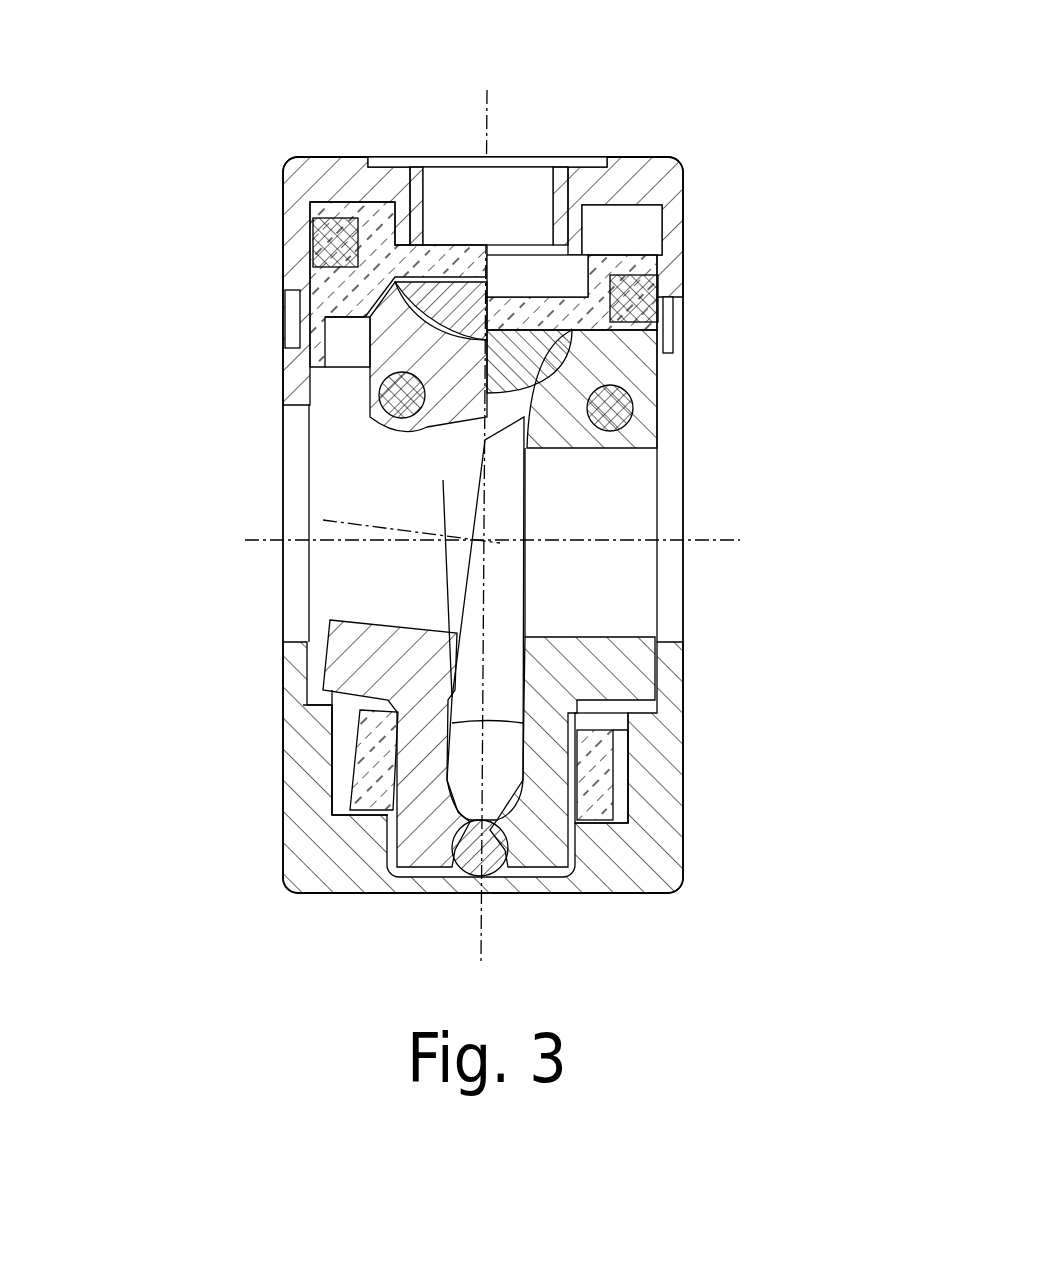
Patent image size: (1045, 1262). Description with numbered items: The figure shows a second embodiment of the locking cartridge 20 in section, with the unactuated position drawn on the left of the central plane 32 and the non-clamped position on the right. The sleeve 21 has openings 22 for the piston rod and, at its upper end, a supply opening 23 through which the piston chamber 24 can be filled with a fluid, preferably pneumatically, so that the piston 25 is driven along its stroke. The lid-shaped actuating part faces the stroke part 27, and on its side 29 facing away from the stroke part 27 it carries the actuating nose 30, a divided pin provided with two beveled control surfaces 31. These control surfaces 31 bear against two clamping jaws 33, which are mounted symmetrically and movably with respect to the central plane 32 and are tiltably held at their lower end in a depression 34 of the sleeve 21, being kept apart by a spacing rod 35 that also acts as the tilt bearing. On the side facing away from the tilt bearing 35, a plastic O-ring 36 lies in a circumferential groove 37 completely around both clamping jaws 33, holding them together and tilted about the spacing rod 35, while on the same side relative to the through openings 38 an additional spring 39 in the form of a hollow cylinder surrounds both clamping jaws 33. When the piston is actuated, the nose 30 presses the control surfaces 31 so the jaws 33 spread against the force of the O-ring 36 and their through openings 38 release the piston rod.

The locking cartridge 20 is at (428, 155).
The sleeve 21 is at (303, 180).
The openings 22 is at (297, 448).
The supply opening 23 is at (515, 198).
The piston chamber 24 is at (650, 222).
The piston 25 is at (618, 233).
The stroke part 27 is at (323, 285).
The side 29 is at (284, 284).
The actuating nose 30 is at (422, 303).
The control surfaces 31 is at (498, 425).
The central plane 32 is at (485, 128).
The clamping jaws 33 is at (387, 661).
The depression 34 is at (353, 702).
The spacing rod 35 is at (470, 858).
The O-ring 36 is at (617, 412).
The circumferential groove 37 is at (433, 495).
The through openings 38 is at (450, 442).
The additional spring 39 is at (598, 787).